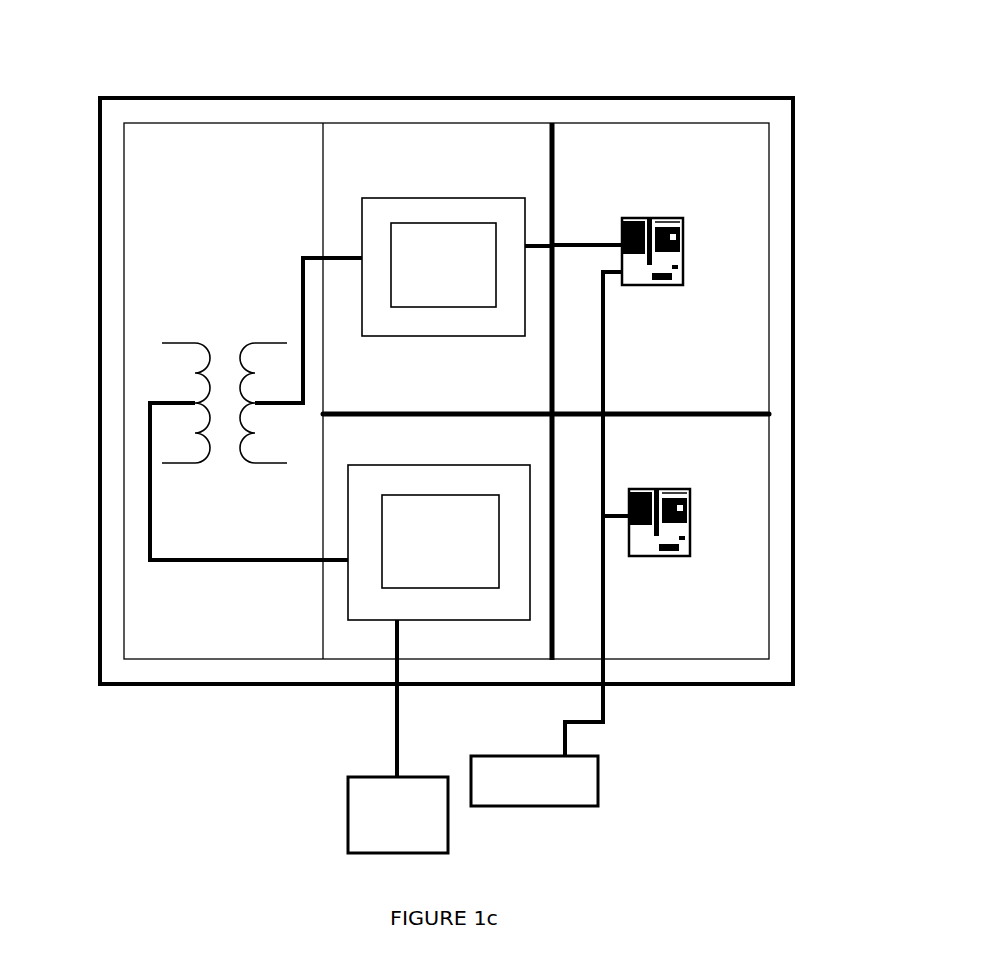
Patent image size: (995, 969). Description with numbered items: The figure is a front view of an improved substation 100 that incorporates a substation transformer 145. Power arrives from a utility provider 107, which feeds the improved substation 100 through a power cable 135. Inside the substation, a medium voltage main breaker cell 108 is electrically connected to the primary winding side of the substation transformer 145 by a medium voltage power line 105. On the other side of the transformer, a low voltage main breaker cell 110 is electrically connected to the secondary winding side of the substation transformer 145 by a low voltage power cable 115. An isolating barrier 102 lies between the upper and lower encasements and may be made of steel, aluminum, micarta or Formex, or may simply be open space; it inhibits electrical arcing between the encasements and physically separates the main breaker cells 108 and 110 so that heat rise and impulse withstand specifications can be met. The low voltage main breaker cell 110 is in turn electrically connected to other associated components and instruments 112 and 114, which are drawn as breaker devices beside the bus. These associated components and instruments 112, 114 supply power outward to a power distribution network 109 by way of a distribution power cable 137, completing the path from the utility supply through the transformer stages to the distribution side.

The improved substation 100 is at (109, 819).
The isolating barrier 102 is at (735, 417).
The medium voltage power line 105 is at (150, 492).
The utility provider 107 is at (348, 813).
The medium voltage main breaker cell 108 is at (348, 593).
The power distribution network 109 is at (598, 781).
The low voltage main breaker cell 110 is at (447, 198).
The associated component and instrument 112 is at (683, 245).
The associated component and instrument 114 is at (690, 516).
The low voltage power cable 115 is at (301, 284).
The power cable 135 is at (397, 739).
The distribution power cable 137 is at (603, 361).
The substation transformer 145 is at (173, 366).